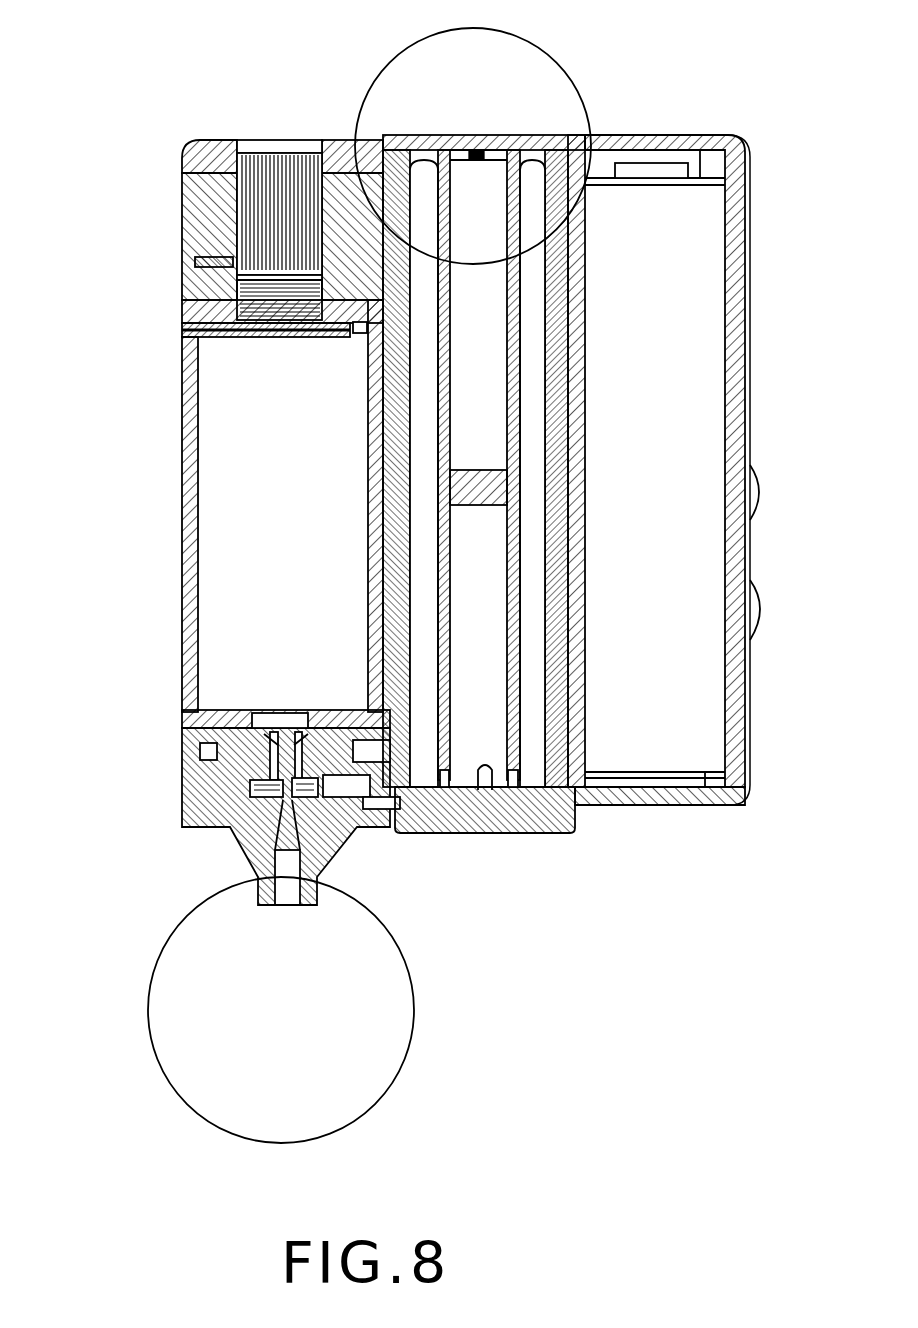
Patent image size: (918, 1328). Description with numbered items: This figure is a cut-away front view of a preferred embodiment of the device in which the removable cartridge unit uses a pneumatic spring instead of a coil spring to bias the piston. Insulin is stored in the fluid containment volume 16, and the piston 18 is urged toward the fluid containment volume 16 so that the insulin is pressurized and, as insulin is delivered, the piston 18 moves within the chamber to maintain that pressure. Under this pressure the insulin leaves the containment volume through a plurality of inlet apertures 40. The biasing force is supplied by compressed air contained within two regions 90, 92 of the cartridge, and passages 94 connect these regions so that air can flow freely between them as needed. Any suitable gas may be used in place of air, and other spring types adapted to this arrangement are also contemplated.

The fluid containment volume 16 is at (470, 378).
The piston 18 is at (445, 488).
The inlet apertures 40 is at (477, 136).
The region 90 is at (487, 580).
The region 92 is at (432, 655).
The passages 94 is at (512, 782).